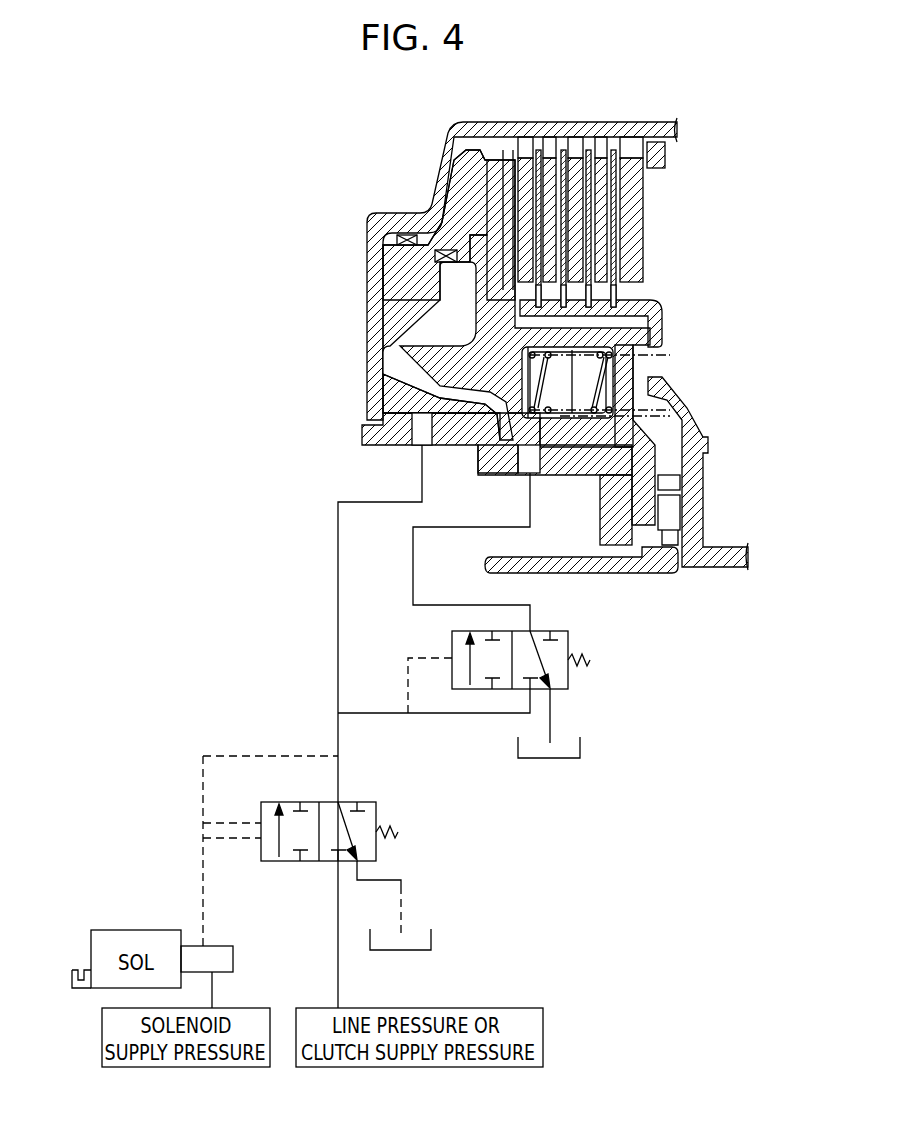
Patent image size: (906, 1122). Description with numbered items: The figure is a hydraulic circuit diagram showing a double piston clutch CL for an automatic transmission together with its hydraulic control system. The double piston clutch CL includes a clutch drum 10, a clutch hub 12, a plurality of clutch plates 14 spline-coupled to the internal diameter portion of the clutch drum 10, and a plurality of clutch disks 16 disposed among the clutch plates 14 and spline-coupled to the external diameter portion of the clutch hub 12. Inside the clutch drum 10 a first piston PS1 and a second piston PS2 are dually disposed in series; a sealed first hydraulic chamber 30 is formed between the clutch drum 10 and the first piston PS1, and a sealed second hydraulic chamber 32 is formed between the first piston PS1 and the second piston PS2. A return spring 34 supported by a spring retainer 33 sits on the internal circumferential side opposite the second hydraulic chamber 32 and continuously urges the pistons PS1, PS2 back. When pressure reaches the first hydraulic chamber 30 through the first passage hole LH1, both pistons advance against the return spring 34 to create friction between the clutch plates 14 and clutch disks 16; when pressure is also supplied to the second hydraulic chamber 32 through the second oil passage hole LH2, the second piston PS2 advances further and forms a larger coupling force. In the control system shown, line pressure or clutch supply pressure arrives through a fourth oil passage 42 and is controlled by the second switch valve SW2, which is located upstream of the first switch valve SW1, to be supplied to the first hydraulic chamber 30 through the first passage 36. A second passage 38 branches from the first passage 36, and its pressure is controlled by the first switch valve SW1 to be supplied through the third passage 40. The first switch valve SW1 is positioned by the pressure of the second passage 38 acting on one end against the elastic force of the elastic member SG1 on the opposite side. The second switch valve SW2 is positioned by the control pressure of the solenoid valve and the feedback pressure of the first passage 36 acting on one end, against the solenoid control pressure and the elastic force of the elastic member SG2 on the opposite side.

The clutch drum 10 is at (457, 142).
The clutch hub 12 is at (670, 386).
The clutch plates 14 is at (605, 150).
The clutch disks 16 is at (564, 150).
The double piston clutch CL is at (627, 190).
The first piston PS1 is at (393, 300).
The second piston PS2 is at (425, 330).
The first hydraulic chamber 30 is at (395, 394).
The second hydraulic chamber 32 is at (490, 445).
The spring retainer 33 is at (625, 408).
The return spring 34 is at (603, 367).
The first passage hole LH1 is at (415, 440).
The second oil passage hole LH2 is at (541, 470).
The first passage 36 is at (338, 568).
The second passage 38 is at (420, 713).
The third passage 40 is at (413, 568).
The fourth oil passage 42 is at (337, 937).
The first switch valve SW1 is at (580, 632).
The elastic member SG1 is at (590, 660).
The second switch valve SW2 is at (388, 804).
The elastic member SG2 is at (398, 832).